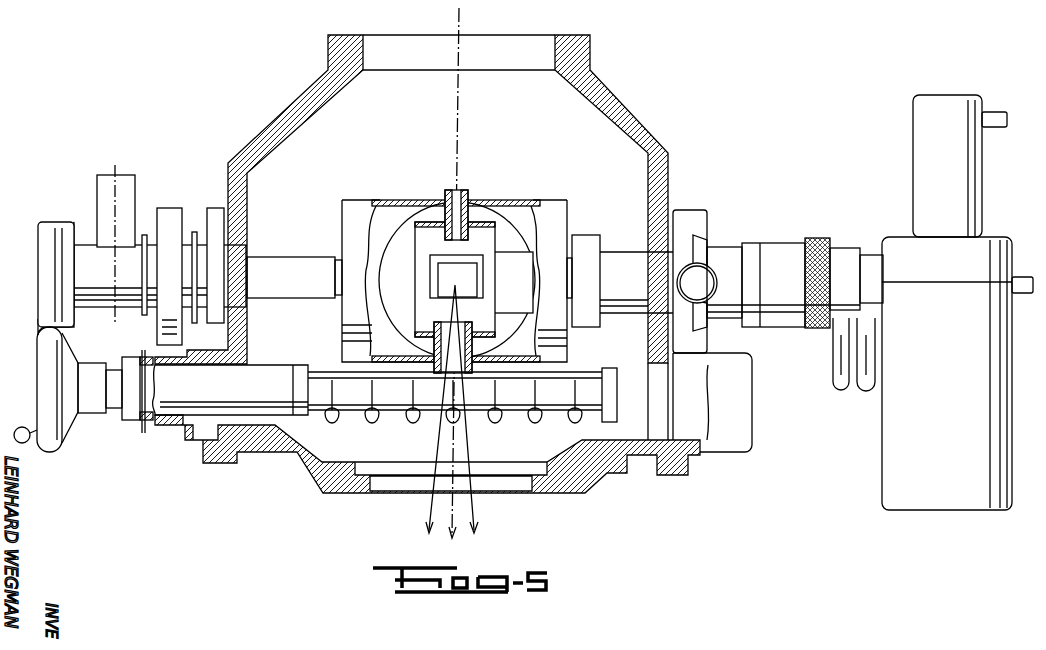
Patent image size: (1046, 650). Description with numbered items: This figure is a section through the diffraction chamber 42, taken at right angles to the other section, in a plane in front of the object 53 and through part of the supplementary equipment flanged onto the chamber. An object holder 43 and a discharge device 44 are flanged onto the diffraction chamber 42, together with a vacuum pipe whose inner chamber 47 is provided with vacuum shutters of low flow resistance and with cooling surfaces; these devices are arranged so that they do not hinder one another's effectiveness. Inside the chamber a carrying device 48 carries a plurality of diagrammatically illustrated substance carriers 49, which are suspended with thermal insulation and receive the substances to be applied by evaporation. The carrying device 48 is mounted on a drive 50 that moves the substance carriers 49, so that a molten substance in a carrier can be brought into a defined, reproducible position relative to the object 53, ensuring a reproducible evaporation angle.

The diffraction chamber 42 is at (623, 117).
The object holder 43 is at (795, 283).
The discharge device 44 is at (102, 275).
The inner chamber 47 is at (393, 190).
The carrying device 48 is at (563, 402).
The substance carriers 49 is at (373, 429).
The drive 50 is at (133, 359).
The object 53 is at (445, 254).